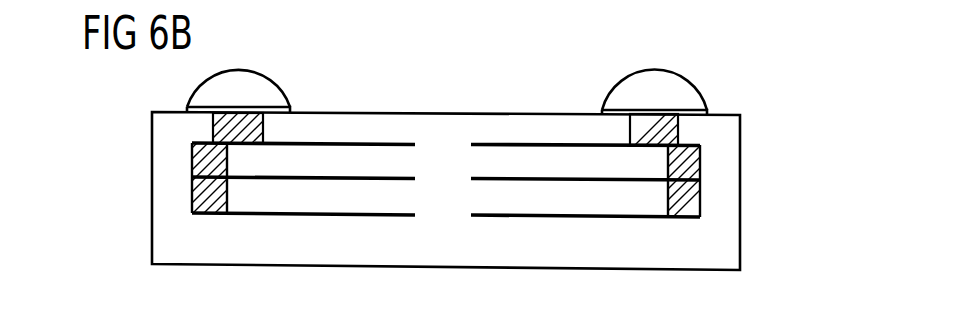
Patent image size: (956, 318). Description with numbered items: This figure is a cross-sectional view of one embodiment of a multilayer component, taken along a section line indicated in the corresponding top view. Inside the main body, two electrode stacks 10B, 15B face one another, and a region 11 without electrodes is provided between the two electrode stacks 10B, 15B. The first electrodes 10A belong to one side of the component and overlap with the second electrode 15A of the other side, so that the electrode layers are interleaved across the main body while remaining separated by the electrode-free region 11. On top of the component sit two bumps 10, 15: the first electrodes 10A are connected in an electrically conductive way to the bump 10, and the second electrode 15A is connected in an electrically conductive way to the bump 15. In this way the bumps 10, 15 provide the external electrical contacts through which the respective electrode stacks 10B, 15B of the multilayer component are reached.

The bump 10 is at (238, 94).
The first electrodes 10A is at (317, 214).
The electrode stack 10B is at (182, 143).
The region without electrodes 11 is at (435, 135).
The bump 15 is at (653, 97).
The second electrode 15A is at (518, 216).
The electrode stack 15B is at (712, 147).